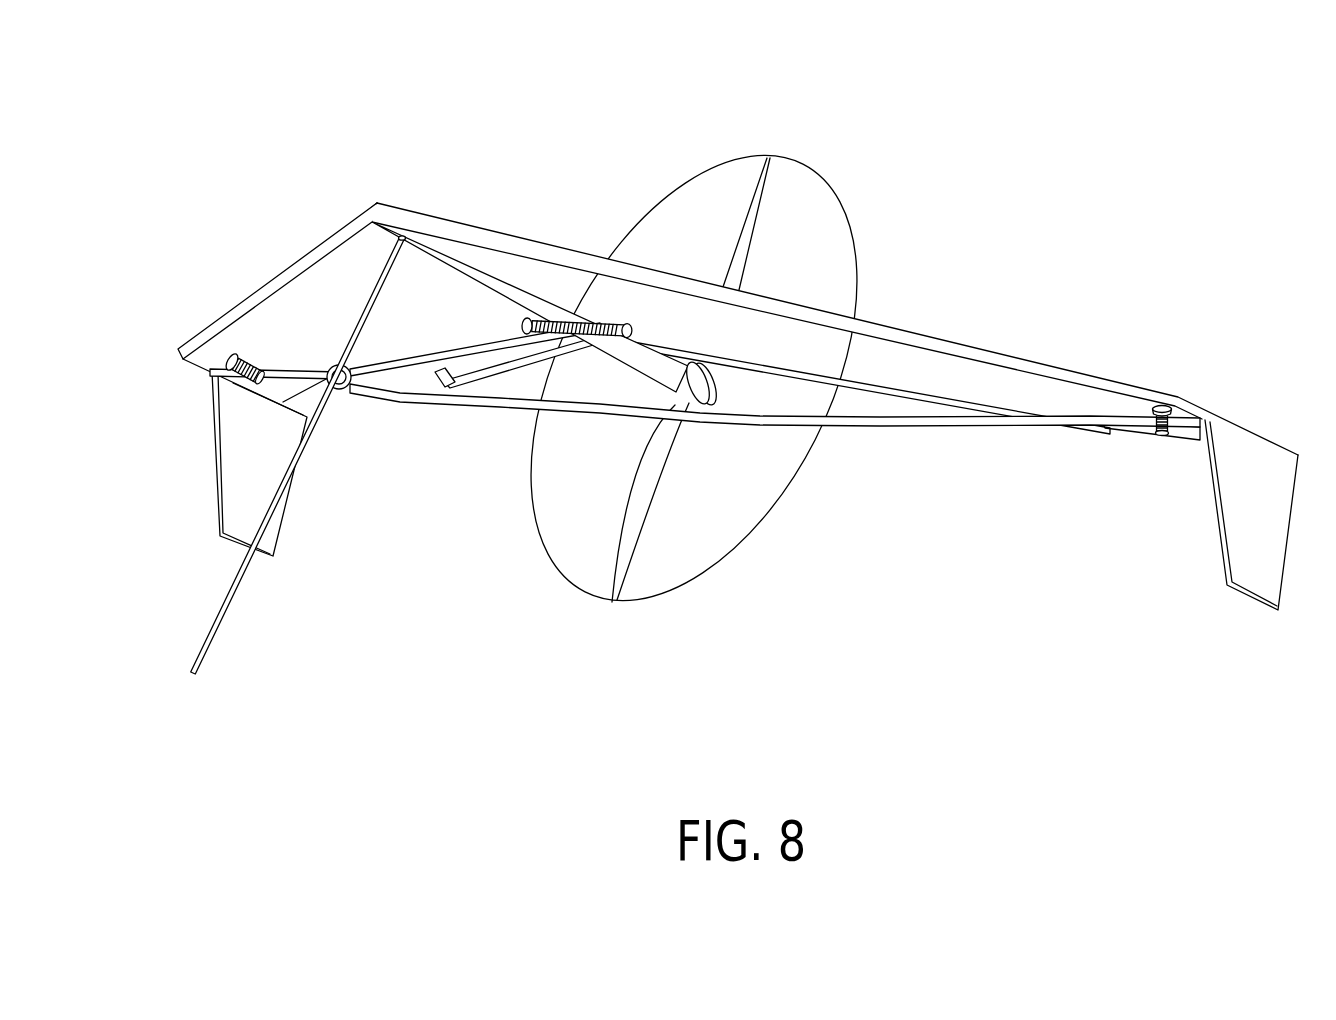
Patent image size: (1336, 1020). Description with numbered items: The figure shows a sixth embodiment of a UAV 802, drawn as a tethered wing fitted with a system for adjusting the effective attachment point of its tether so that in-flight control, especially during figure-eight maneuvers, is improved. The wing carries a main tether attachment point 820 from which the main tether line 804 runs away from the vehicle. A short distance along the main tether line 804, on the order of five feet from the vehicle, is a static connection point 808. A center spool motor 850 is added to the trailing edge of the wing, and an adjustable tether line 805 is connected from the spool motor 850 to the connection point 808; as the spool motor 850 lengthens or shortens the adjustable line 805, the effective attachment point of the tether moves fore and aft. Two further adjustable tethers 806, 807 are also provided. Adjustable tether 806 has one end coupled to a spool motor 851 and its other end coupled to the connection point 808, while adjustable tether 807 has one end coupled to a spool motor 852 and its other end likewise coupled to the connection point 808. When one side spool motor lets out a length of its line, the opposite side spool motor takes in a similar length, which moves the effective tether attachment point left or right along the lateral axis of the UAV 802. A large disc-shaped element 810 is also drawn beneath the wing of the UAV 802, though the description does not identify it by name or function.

The UAV 802 is at (1188, 135).
The main tether line 804 is at (190, 624).
The adjustable tether line 805 is at (446, 342).
The adjustable tether 806 is at (298, 350).
The adjustable tether 807 is at (897, 452).
The static connection point 808 is at (343, 418).
The disc 810 is at (752, 578).
The main tether attachment point 820 is at (378, 247).
The center spool motor 850 is at (583, 298).
The spool motor 851 is at (222, 379).
The spool motor 852 is at (1162, 458).